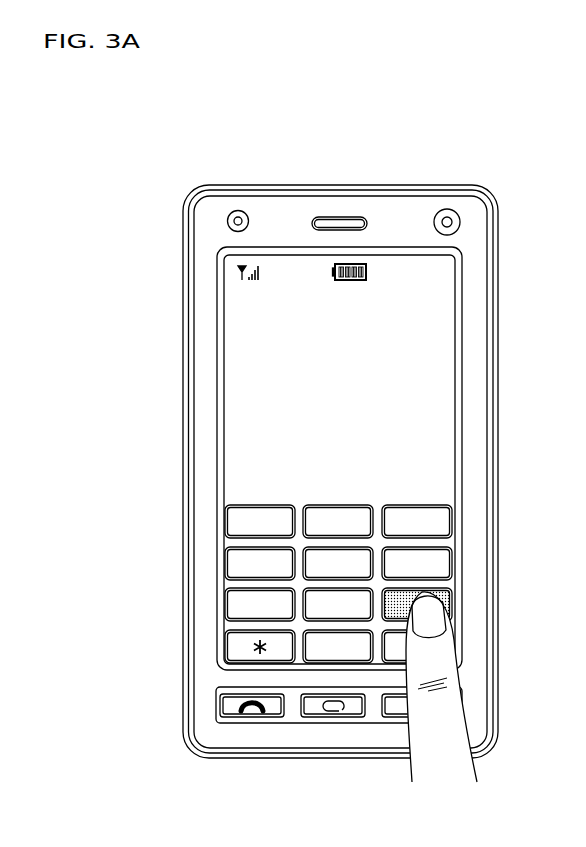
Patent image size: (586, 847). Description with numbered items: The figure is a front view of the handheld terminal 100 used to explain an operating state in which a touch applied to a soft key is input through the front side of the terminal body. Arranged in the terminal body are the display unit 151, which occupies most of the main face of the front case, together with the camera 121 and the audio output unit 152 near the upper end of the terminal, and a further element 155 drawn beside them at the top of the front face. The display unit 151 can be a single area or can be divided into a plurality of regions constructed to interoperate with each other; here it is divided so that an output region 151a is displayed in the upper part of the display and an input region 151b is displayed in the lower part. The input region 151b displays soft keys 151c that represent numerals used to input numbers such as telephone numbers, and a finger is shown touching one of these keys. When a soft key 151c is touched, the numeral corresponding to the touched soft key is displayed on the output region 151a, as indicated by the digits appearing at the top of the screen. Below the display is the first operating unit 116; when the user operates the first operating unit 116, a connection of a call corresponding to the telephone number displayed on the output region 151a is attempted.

The handheld terminal 100 is at (166, 168).
The camera 121 is at (239, 219).
The audio output unit 152 is at (340, 222).
The sensor / proximity sensor 155 is at (448, 221).
The display unit 151 is at (211, 352).
The output region 151a is at (233, 414).
The input region 151b is at (260, 584).
The soft key 151c is at (236, 521).
The first operating unit 116 is at (252, 715).